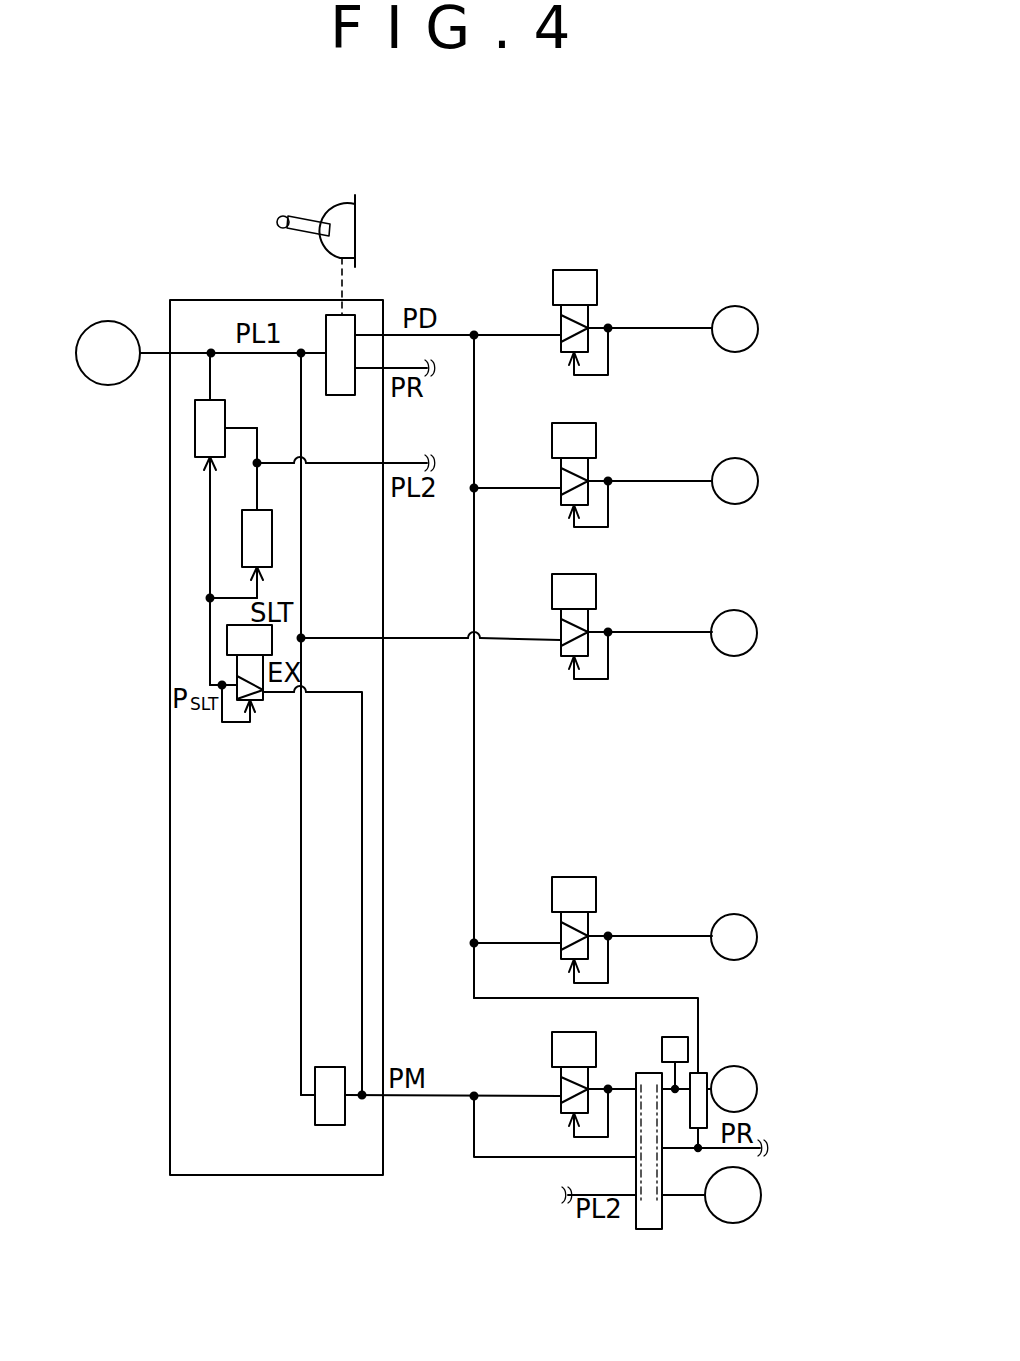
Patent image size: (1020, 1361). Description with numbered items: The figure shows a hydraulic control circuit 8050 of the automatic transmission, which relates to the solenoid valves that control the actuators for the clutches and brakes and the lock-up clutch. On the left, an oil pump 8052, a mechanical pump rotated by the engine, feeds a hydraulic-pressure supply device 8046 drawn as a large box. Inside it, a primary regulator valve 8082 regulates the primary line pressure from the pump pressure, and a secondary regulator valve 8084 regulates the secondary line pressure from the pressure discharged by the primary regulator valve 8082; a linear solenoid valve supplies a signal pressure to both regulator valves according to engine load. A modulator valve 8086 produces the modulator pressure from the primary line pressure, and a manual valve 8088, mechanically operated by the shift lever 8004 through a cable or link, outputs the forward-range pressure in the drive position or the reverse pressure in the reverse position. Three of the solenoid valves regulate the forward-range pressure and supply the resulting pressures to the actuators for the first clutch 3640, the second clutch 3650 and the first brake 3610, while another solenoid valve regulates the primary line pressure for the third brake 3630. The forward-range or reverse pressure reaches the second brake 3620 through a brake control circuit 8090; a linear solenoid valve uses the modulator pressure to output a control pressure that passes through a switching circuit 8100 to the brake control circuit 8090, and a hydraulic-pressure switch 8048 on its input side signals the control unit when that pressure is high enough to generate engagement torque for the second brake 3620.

The shift lever 8004 is at (307, 216).
The hydraulic-pressure supply device 8046 is at (240, 300).
The hydraulic control circuit 8050 is at (538, 195).
The oil pump 8052 is at (108, 322).
The primary regulator valve 8082 is at (225, 420).
The secondary regulator valve 8084 is at (272, 535).
The modulator valve 8086 is at (315, 1110).
The manual valve 8088 is at (340, 395).
The hydraulic-pressure switch 8048 is at (676, 1036).
The B2 brake control circuit 8090 is at (702, 1070).
The switching circuit 8100 is at (649, 1229).
The B1 brake 3610 is at (772, 900).
The B2 brake 3620 is at (772, 1054).
The B3 brake 3630 is at (772, 598).
The C1 clutch 3640 is at (752, 312).
The C2 clutch 3650 is at (752, 464).